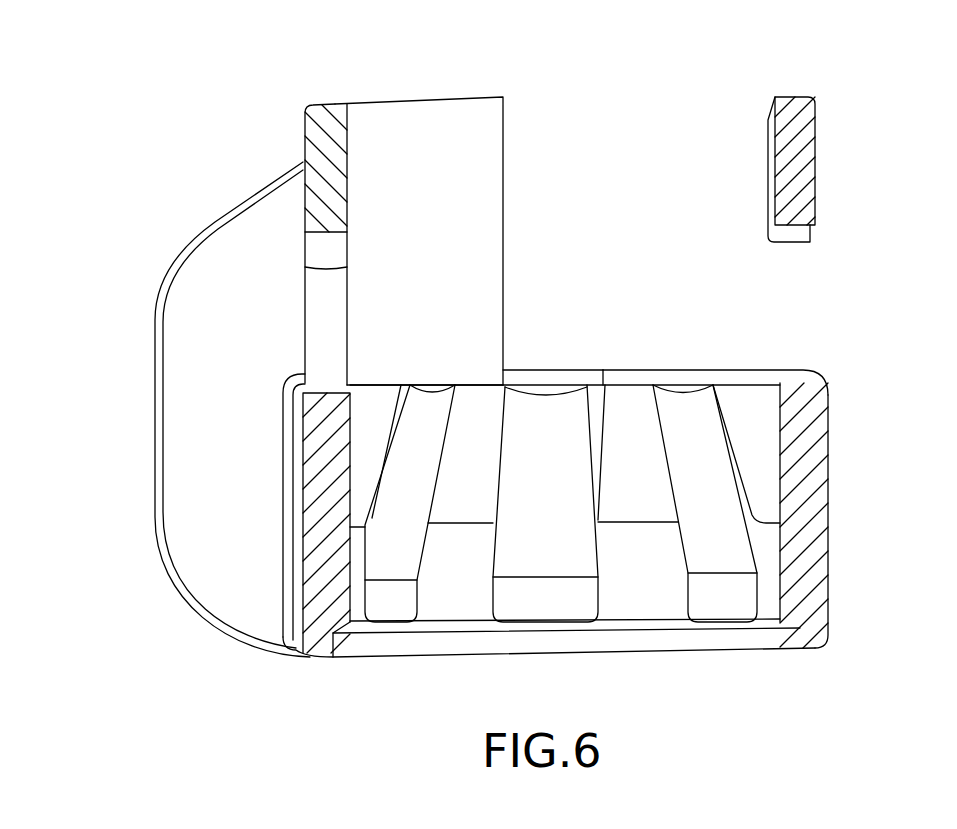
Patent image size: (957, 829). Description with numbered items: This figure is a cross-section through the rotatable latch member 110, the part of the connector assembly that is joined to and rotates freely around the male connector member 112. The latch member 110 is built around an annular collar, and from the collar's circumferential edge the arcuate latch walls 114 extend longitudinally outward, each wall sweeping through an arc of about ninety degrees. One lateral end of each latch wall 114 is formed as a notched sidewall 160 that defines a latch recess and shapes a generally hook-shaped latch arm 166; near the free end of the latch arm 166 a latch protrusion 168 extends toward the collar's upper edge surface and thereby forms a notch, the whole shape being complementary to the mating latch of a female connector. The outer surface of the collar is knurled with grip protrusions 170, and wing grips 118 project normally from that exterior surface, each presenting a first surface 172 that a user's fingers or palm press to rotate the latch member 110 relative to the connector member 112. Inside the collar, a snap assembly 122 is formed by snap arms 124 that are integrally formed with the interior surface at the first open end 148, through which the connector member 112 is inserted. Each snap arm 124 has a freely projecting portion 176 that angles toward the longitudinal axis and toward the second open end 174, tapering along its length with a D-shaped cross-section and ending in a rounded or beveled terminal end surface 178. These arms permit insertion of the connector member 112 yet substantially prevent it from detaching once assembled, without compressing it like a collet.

The rotatable latch member 110 is at (883, 97).
The connector member 112 is at (830, 563).
The arcuate latch walls 114 is at (495, 148).
The wing grips 118 is at (167, 413).
The snap assembly 122 is at (461, 585).
The snap arms 124 is at (393, 568).
The first open end 148 is at (640, 638).
The notched sidewall 160 is at (305, 290).
The latch arm 166 is at (303, 128).
The latch protrusion 168 is at (815, 235).
The grip protrusions 170 is at (630, 403).
The first surface 172 is at (545, 373).
The second open end 174 is at (728, 467).
The freely projecting portion 176 is at (447, 387).
The terminal end surface 178 is at (555, 397).